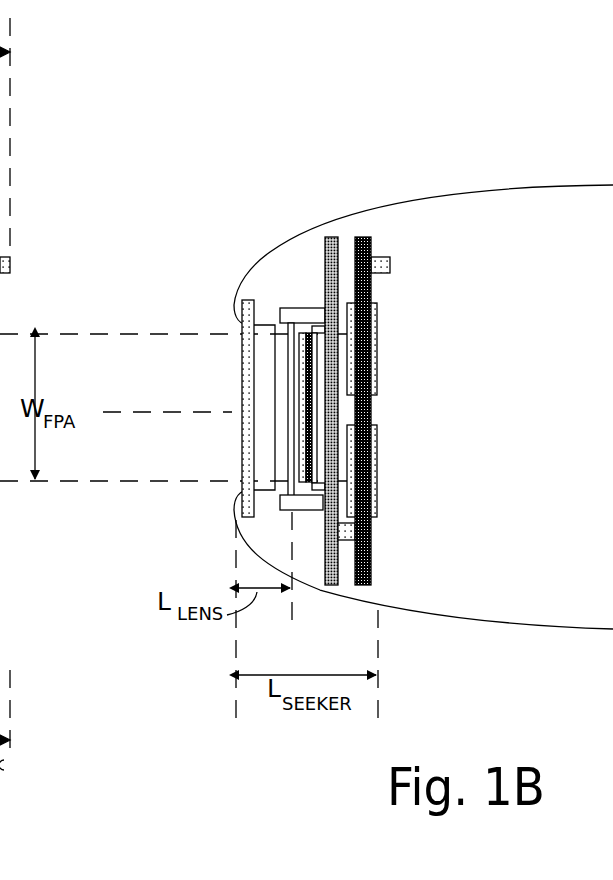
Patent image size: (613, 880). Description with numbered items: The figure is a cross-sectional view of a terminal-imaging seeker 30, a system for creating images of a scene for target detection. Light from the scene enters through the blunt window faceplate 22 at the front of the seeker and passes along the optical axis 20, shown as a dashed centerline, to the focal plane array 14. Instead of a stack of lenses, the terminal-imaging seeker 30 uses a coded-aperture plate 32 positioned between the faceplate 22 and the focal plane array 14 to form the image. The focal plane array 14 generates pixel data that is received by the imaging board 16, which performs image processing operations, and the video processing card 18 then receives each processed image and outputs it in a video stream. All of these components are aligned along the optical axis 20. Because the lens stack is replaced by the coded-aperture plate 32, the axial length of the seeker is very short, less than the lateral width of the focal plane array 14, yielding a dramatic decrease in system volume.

The focal plane array 14 is at (325, 403).
The imaging board 16 is at (330, 237).
The video processing card 18 is at (378, 551).
The optical axis 20 is at (173, 411).
The blunt window faceplate 22 is at (232, 362).
The terminal-imaging seeker 30 is at (457, 124).
The coded-aperture plate 32 is at (288, 303).